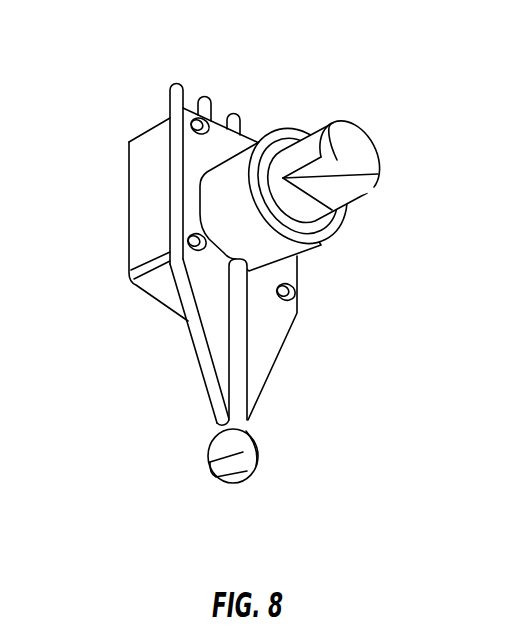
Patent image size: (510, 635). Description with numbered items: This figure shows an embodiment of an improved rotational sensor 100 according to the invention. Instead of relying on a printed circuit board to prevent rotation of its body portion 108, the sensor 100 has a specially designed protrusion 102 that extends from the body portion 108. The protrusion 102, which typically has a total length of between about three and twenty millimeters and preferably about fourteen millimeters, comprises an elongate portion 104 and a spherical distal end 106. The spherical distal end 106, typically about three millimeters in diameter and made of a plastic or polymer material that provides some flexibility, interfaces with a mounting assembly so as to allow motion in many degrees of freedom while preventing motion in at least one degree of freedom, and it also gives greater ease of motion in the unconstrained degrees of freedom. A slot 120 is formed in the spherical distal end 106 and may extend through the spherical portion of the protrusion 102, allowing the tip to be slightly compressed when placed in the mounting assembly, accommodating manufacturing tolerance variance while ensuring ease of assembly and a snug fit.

The rotational sensor 100 is at (244, 278).
The protrusion 102 is at (333, 280).
The elongate portion 104 is at (200, 356).
The spherical distal end 106 is at (208, 454).
The body portion 108 is at (147, 182).
The slot 120 is at (243, 468).